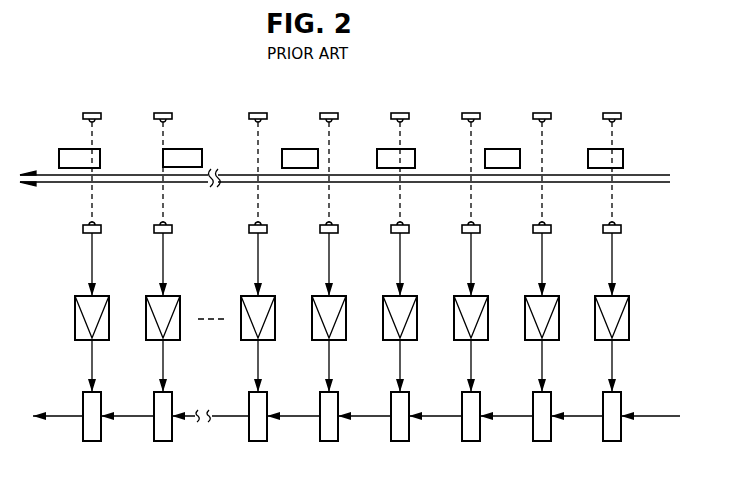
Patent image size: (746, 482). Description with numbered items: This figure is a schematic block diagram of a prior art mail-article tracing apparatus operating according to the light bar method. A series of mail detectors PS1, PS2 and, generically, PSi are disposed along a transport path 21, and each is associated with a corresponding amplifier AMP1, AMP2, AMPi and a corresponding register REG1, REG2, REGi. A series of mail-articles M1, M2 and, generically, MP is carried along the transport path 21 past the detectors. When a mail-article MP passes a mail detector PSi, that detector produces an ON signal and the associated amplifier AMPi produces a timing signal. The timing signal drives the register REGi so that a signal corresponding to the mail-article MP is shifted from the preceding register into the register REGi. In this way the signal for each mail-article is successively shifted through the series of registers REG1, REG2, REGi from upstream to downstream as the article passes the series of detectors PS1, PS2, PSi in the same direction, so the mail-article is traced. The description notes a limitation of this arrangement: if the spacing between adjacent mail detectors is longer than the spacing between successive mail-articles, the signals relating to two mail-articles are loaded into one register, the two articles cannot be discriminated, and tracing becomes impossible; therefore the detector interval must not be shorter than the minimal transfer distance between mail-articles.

The transport path 21 is at (578, 183).
The mail detector PS1 is at (90, 113).
The mail detector PS2 is at (162, 113).
The mail detector PSi is at (258, 113).
The mail-article M1 is at (57, 149).
The mail-article M2 is at (161, 149).
The mail-article MP is at (286, 148).
The amplifier AMP1 is at (75, 297).
The amplifier AMP2 is at (146, 296).
The amplifier AMPi is at (241, 296).
The register REG1 is at (92, 441).
The register REG2 is at (163, 441).
The register REGi is at (258, 441).